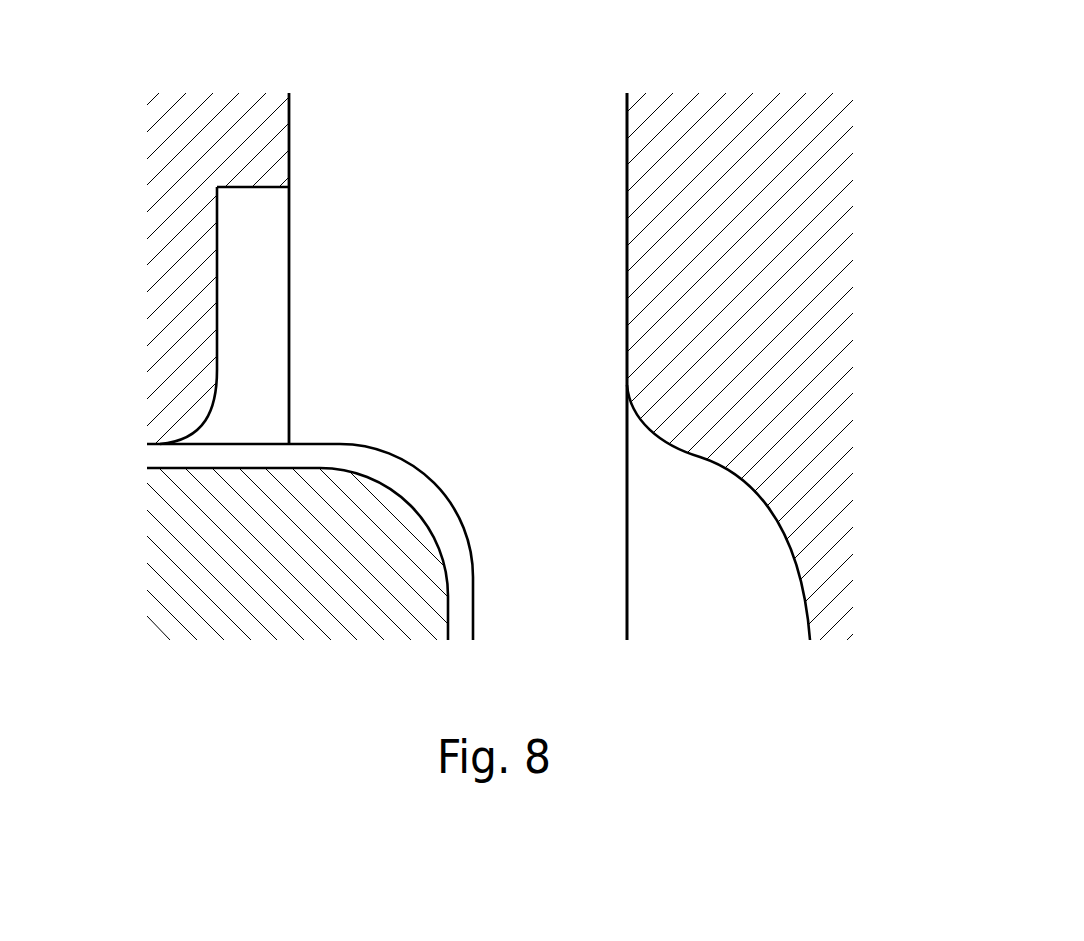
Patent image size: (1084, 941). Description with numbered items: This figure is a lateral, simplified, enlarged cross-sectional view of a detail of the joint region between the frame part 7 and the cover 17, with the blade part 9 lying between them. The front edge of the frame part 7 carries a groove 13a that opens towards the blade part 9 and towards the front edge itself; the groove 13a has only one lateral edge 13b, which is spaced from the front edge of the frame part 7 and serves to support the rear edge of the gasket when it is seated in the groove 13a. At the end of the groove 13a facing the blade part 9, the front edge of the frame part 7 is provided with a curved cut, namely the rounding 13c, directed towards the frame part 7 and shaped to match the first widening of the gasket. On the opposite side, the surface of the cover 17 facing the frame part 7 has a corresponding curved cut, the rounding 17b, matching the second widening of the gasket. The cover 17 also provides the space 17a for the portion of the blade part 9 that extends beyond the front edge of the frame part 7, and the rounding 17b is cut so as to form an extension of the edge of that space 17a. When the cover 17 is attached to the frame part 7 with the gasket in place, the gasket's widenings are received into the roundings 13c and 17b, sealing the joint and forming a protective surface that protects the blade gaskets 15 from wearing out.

The frame part 7 is at (172, 95).
The blade part 9 is at (163, 593).
The groove 13a is at (277, 290).
The lateral edge 13b is at (217, 258).
The rounding 13c is at (207, 432).
The blade gaskets 15 is at (408, 480).
The cover 17 is at (838, 158).
The space 17a is at (645, 531).
The rounding 17b is at (637, 430).